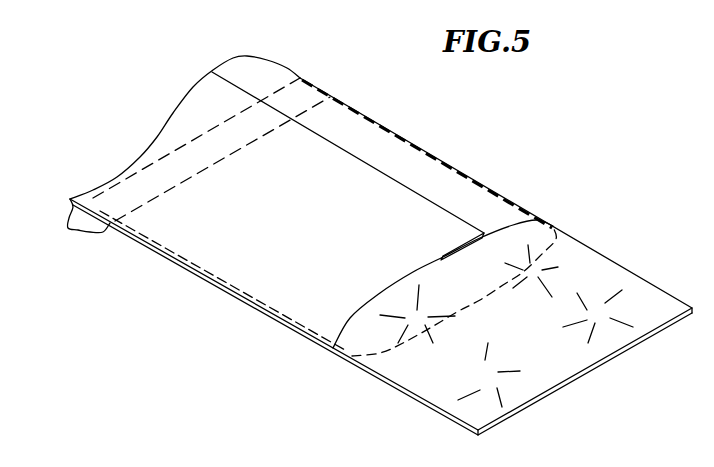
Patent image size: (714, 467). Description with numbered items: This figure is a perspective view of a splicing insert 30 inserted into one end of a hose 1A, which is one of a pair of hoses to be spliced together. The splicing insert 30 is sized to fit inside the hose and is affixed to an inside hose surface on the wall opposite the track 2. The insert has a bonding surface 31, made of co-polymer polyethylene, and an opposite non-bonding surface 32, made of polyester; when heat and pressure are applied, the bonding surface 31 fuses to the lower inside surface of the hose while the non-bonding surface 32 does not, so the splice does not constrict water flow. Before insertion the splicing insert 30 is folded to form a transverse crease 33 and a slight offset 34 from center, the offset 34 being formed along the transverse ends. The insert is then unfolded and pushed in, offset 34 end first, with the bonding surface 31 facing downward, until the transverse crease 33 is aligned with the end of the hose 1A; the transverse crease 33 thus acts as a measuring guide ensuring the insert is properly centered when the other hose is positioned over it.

The hose 1A is at (393, 84).
The track 2 is at (377, 166).
The splicing insert 30 is at (613, 260).
The bonding surface 31 is at (574, 397).
The non-bonding surface 32 is at (479, 377).
The transverse crease 33 is at (560, 219).
The offset 34 is at (69, 229).